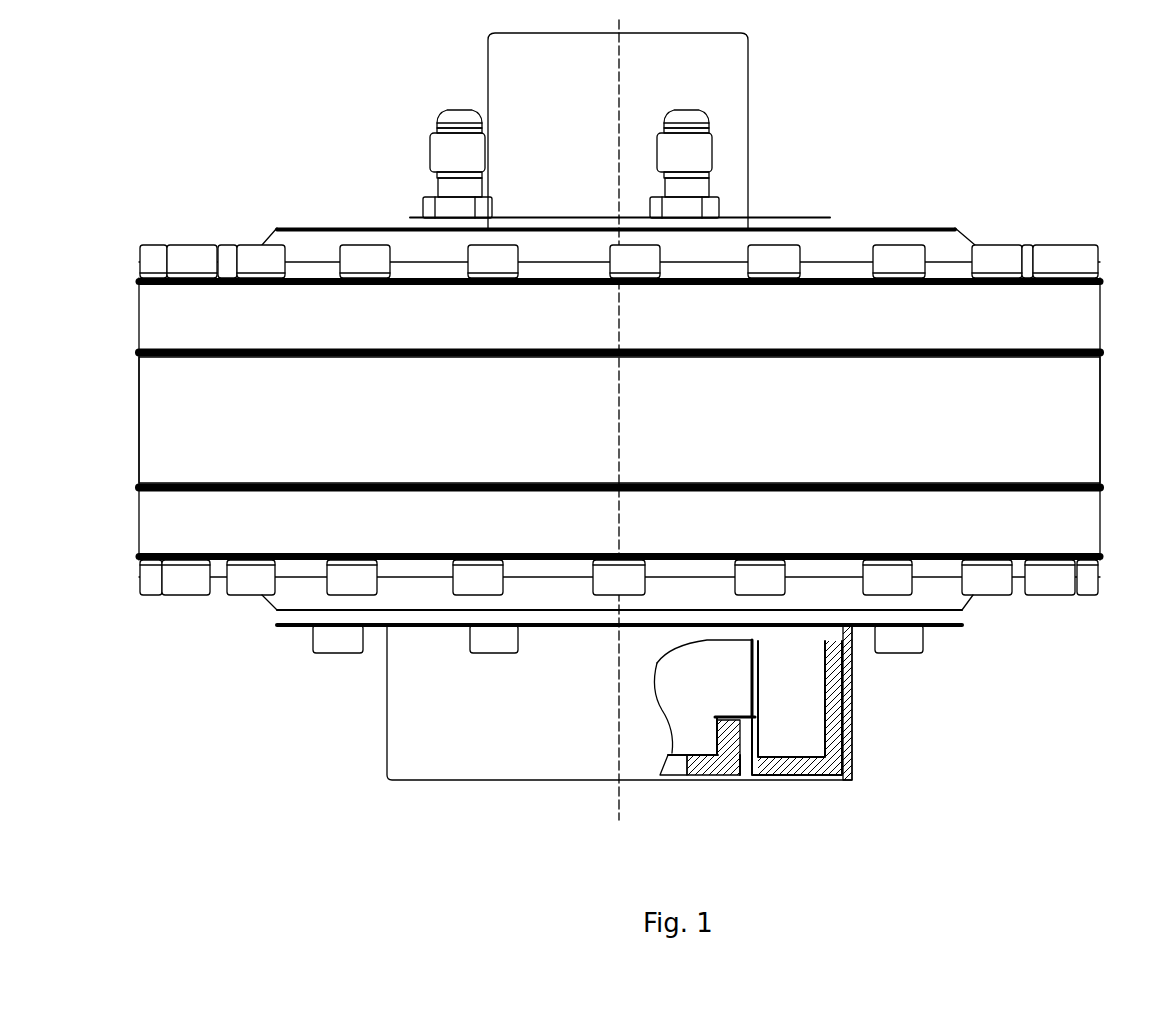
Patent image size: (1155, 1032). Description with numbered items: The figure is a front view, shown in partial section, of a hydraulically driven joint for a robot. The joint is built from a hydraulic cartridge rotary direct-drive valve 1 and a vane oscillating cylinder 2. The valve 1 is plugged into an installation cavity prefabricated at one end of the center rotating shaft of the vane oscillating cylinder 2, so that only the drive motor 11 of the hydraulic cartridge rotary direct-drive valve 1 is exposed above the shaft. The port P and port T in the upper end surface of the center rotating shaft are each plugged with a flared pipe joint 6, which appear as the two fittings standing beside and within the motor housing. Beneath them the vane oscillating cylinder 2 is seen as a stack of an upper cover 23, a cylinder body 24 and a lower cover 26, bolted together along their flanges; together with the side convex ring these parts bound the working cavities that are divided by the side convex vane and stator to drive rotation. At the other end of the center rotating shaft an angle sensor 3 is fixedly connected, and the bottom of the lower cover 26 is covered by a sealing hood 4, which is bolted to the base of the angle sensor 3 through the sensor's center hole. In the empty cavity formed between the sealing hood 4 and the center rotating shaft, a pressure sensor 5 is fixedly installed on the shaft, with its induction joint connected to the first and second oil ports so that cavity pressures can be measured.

The hydraulic cartridge rotary direct-drive valve 1 is at (503, 93).
The drive motor 11 is at (714, 102).
The flared pipe joint 6 is at (460, 157).
The vane oscillating cylinder 2 is at (840, 325).
The upper cover 23 is at (905, 305).
The cylinder body 24 is at (900, 395).
The lower cover 26 is at (928, 540).
The angle sensor 3 is at (693, 682).
The sealing hood 4 is at (740, 767).
The pressure sensor 5 is at (807, 655).